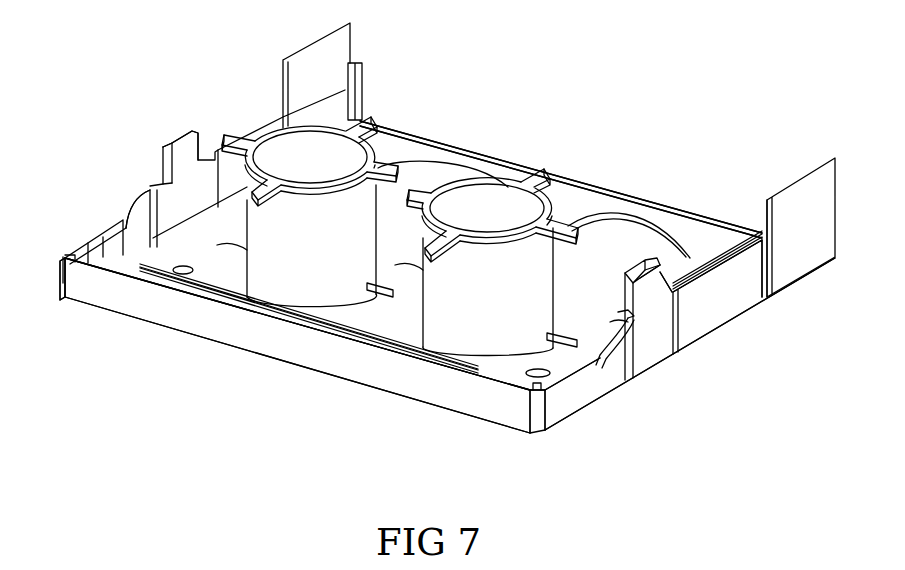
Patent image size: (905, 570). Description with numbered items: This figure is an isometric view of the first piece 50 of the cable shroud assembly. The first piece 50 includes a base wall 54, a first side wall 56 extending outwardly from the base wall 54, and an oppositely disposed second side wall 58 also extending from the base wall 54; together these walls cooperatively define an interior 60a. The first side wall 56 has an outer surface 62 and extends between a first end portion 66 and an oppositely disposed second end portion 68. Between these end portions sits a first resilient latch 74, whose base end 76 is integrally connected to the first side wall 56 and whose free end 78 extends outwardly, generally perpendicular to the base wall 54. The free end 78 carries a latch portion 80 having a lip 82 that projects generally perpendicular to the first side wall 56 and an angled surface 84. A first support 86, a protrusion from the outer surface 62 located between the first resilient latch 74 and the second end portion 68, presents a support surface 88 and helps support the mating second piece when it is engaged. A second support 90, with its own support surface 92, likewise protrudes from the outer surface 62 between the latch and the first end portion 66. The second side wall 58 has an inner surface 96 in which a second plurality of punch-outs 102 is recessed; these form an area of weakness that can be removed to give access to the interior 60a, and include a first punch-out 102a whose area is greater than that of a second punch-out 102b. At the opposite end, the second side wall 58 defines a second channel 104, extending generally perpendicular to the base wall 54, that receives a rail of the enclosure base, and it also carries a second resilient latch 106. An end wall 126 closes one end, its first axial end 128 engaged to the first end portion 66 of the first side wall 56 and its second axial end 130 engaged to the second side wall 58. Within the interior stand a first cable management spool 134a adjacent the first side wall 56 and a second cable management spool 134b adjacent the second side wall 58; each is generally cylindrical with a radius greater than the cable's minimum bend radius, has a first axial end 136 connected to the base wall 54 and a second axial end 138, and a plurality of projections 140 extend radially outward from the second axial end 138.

The first piece 50 is at (222, 80).
The base wall 54 is at (398, 162).
The first side wall 56 is at (688, 327).
The second side wall 58 is at (263, 113).
The interior 60a is at (382, 324).
The outer surface 62 is at (717, 297).
The first end portion 66 is at (573, 402).
The second end portion 68 is at (792, 265).
The first resilient latch 74 is at (647, 301).
The base end 76 is at (626, 314).
The free end 78 is at (637, 272).
The latch portion 80 is at (652, 256).
The lip 82 is at (668, 262).
The angled surface 84 is at (648, 255).
The first support 86 is at (723, 312).
The support surface 88 is at (740, 233).
The second support 90 is at (630, 338).
The support surface 92 is at (618, 322).
The inner surface 96 is at (184, 170).
The second plurality of punch-outs 102 is at (88, 230).
The first punch-out 102a is at (80, 248).
The second punch-out 102b is at (104, 240).
The second channel 104 is at (362, 101).
The second resilient latch 106 is at (165, 137).
The end wall 126 is at (397, 382).
The first axial end 128 is at (517, 415).
The second axial end 130 is at (88, 292).
The first cable management spool 134a is at (486, 262).
The second cable management spool 134b is at (307, 212).
The first axial end 136 is at (310, 296).
The second axial end 138 is at (314, 198).
The projections 140 is at (370, 120).